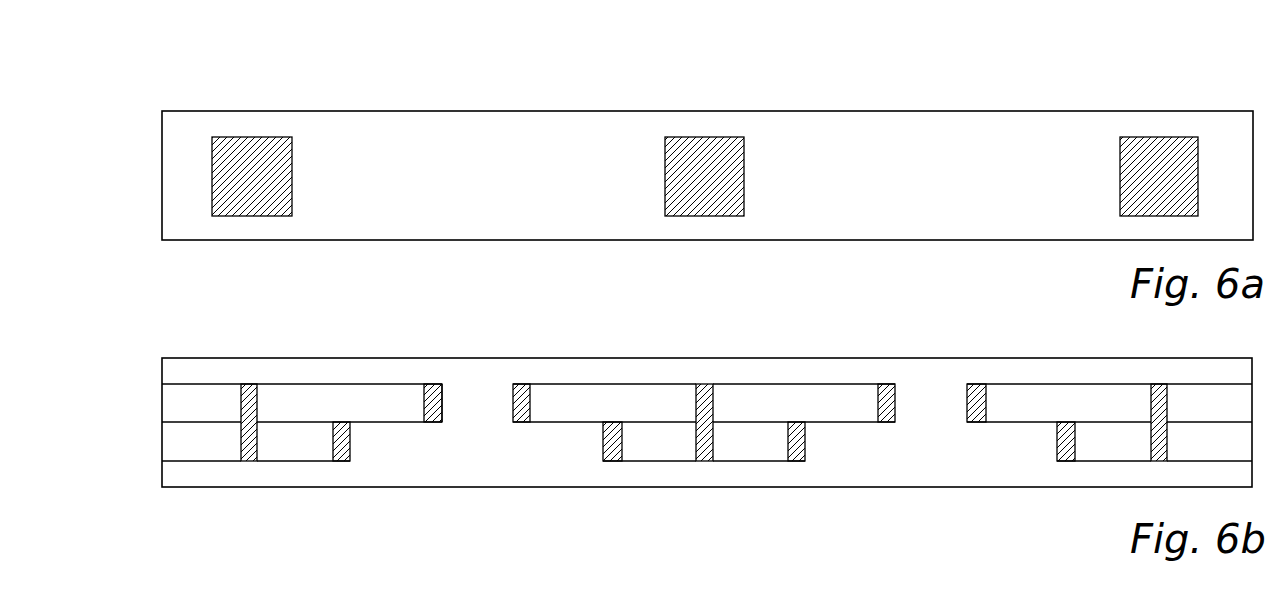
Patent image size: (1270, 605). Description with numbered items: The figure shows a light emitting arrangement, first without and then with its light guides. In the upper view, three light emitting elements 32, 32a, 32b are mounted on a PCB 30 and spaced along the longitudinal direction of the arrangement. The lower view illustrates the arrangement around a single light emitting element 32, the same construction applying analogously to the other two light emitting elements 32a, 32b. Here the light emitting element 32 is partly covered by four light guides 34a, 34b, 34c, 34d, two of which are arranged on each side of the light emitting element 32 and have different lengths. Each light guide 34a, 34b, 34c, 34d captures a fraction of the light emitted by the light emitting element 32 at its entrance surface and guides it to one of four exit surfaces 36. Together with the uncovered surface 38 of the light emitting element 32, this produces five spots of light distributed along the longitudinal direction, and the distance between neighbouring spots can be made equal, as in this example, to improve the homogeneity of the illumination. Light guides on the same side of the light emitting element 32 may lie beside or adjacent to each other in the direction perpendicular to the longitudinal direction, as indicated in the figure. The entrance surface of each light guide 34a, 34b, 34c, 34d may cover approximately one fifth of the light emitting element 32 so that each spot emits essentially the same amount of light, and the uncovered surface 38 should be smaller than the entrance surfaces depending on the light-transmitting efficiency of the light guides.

In FIG. 6A, the PCB 30 is at (937, 153).
In FIG. 6A, the light emitting element 32 is at (703, 167).
In FIG. 6A, the light emitting element 32a is at (252, 167).
In FIG. 6A, the light emitting element 32b is at (1163, 167).
In FIG. 6B, the light guide 34a is at (667, 442).
In FIG. 6B, the light guide 34b is at (763, 448).
In FIG. 6B, the light guide 34c is at (605, 403).
In FIG. 6B, the light guide 34d is at (803, 397).
In FIG. 6B, the exit surface 36 is at (525, 395).
In FIG. 6B, the uncovered surface 38 is at (703, 397).